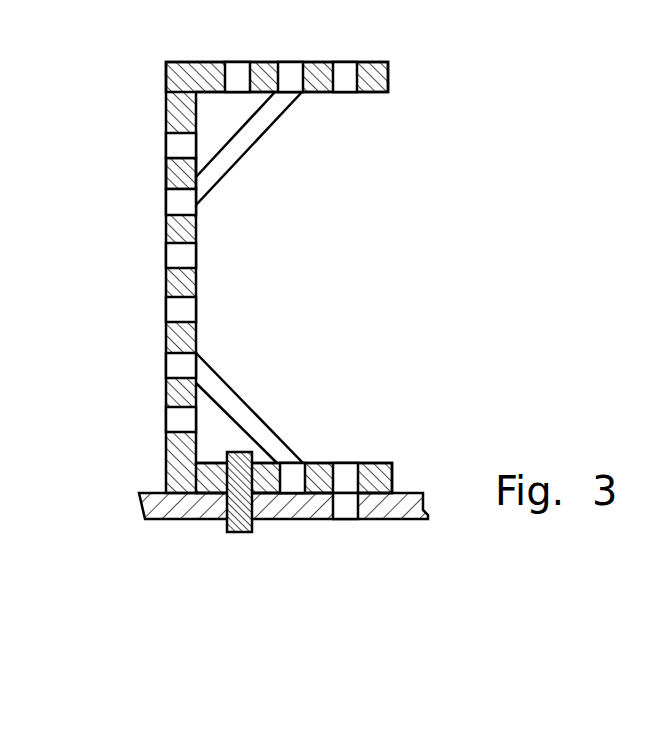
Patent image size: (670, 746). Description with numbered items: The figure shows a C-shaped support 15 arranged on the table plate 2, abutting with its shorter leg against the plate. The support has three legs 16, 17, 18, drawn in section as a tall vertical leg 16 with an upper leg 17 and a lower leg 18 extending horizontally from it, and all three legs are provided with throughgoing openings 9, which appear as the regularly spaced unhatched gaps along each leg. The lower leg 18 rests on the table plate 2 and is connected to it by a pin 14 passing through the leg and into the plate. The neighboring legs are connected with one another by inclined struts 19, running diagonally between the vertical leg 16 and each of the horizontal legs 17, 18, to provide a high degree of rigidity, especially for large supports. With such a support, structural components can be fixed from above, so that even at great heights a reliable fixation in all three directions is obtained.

The table plate 2 is at (188, 513).
The throughgoing openings 9 is at (173, 151).
The pin 14 is at (247, 533).
The C-shaped support 15 is at (128, 340).
The leg 16 is at (178, 179).
The leg 17 is at (385, 60).
The leg 18 is at (393, 463).
The inclined struts 19 is at (245, 132).